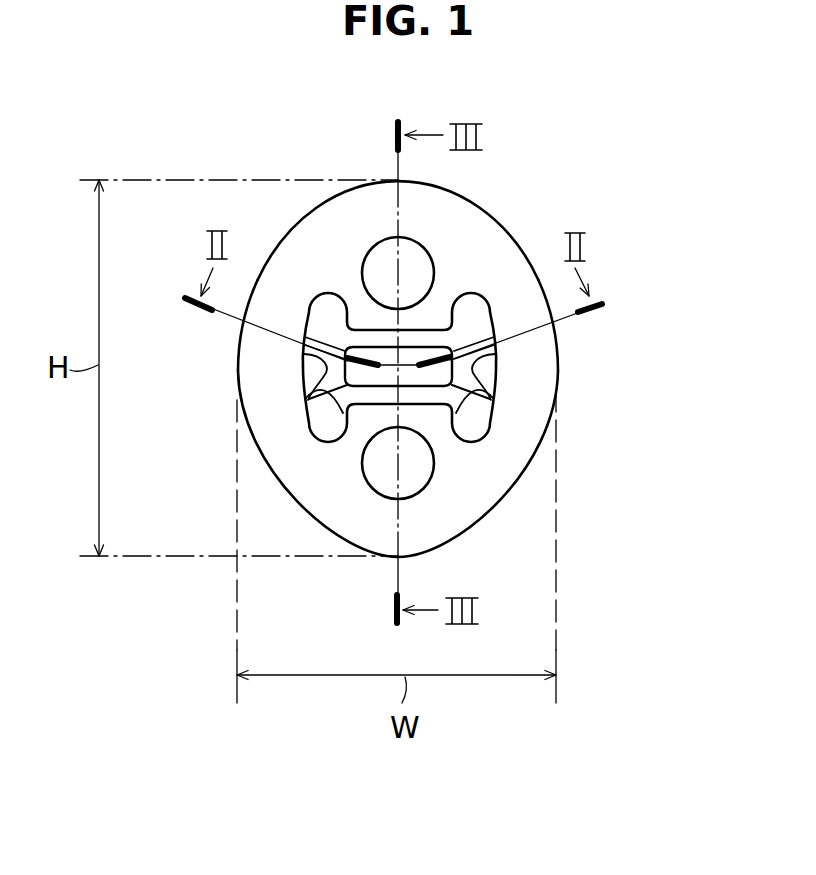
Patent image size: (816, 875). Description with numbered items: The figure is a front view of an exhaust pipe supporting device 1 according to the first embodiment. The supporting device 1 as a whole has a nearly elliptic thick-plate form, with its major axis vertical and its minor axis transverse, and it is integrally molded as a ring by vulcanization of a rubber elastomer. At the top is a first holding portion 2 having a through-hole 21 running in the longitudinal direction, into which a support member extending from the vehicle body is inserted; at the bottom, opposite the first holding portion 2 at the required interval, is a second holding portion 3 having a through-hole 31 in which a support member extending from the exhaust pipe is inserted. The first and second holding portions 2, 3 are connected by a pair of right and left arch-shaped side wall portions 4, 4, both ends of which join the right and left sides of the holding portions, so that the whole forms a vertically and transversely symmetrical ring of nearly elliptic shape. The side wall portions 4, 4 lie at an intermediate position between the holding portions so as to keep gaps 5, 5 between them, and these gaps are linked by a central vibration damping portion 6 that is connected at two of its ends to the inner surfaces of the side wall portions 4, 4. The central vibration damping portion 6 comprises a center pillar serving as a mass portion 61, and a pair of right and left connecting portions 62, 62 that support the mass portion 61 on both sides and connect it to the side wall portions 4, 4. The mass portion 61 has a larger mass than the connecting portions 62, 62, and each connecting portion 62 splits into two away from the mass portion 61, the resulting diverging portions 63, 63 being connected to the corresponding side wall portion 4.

The exhaust pipe supporting device 1 is at (322, 107).
The first holding portion 2 is at (432, 192).
The through-hole 21 is at (382, 262).
The second holding portion 3 is at (380, 538).
The through-hole 31 is at (415, 478).
The side wall portion 4 is at (252, 345).
The gap 5 is at (327, 317).
The central vibration damping portion 6 is at (422, 343).
The mass portion 61 is at (373, 378).
The connecting portion 62 is at (402, 411).
The diverging portion 63 is at (302, 351).